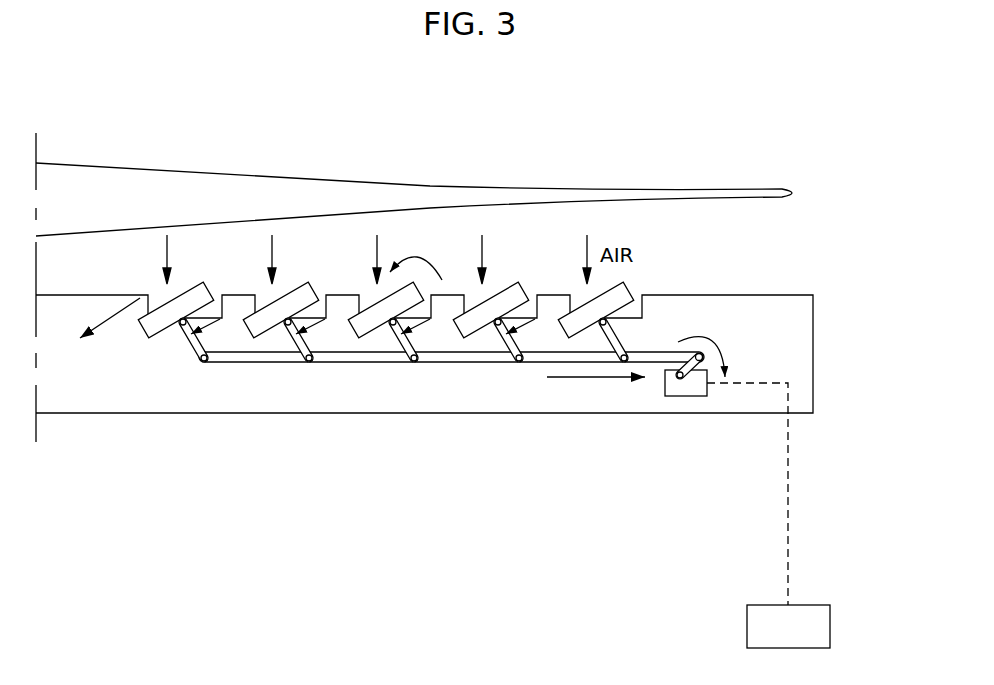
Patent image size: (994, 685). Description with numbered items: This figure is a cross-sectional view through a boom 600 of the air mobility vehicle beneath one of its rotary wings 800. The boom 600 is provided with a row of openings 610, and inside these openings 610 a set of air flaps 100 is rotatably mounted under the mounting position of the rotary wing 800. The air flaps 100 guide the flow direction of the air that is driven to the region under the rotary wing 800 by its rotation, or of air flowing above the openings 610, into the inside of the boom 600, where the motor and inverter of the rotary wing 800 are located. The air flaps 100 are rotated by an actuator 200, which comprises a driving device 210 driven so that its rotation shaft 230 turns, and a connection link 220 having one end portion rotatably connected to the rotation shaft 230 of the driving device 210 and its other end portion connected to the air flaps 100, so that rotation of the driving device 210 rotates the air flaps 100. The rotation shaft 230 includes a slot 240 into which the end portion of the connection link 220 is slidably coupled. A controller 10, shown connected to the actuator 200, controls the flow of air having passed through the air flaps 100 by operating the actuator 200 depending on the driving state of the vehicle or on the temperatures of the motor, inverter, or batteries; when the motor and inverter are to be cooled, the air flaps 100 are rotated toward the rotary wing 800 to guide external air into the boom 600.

The controller 10 is at (768, 515).
The air flaps 100 is at (523, 290).
The actuator 200 is at (654, 400).
The driving device 210 is at (688, 388).
The connection link 220 is at (668, 357).
The rotation shaft 230 is at (684, 377).
The slot 240 is at (700, 353).
The boom 600 is at (793, 327).
The openings 610 is at (262, 292).
The rotary wing 800 is at (137, 188).